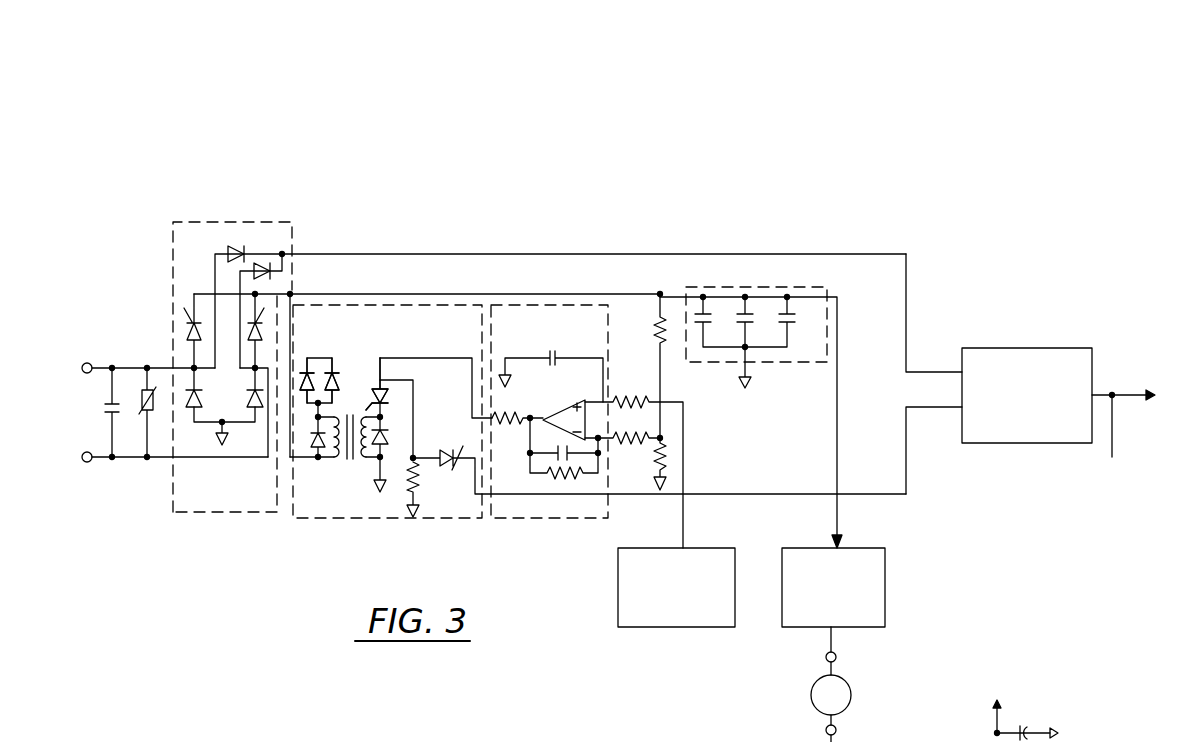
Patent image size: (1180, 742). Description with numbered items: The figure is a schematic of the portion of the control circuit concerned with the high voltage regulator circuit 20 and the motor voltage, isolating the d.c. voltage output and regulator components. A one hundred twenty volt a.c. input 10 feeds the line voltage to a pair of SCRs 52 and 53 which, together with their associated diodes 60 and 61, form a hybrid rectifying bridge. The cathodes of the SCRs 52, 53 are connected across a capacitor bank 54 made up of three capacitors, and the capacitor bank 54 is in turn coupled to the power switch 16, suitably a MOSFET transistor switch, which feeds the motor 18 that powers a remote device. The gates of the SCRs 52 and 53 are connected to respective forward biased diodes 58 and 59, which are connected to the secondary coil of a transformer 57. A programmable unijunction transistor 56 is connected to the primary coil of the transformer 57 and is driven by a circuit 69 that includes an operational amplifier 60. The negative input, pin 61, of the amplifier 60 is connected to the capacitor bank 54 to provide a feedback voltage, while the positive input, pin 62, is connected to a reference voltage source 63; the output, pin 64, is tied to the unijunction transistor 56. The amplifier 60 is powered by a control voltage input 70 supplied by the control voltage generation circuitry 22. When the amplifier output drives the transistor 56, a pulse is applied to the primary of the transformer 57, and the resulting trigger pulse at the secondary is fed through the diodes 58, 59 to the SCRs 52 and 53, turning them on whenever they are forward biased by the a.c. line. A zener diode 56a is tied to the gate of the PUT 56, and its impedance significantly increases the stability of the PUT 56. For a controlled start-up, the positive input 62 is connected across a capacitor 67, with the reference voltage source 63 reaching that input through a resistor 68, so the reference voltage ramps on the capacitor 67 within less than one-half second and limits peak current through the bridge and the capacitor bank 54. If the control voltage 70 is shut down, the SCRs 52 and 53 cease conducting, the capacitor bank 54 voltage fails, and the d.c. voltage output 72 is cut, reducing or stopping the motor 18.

The a.c. input 10 is at (101, 362).
The SCR 52 is at (185, 326).
The SCR 53 is at (262, 325).
The diode / operational amplifier 60 is at (200, 404).
The diode / negative input pin 61 is at (250, 398).
The d.c. voltage output 72 is at (440, 305).
The forward biased diode 58 is at (308, 358).
The forward biased diode 59 is at (333, 358).
The programmable unijunction transistor 56 is at (375, 392).
The transformer 57 is at (352, 462).
The zener diode 56a is at (447, 470).
The capacitor 67 is at (553, 351).
The output pin 64 is at (541, 412).
The resistor 68 is at (629, 400).
The positive input pin 62 is at (606, 412).
The circuit 69 is at (582, 520).
The capacitor bank 54 is at (760, 287).
The high voltage regulator circuit 20 is at (906, 298).
The control voltage generation circuitry 22 is at (1065, 326).
The control voltage input 70 is at (1134, 429).
The reference voltage source 63 is at (632, 627).
The power switch 16 is at (885, 566).
The motor 18 is at (811, 690).